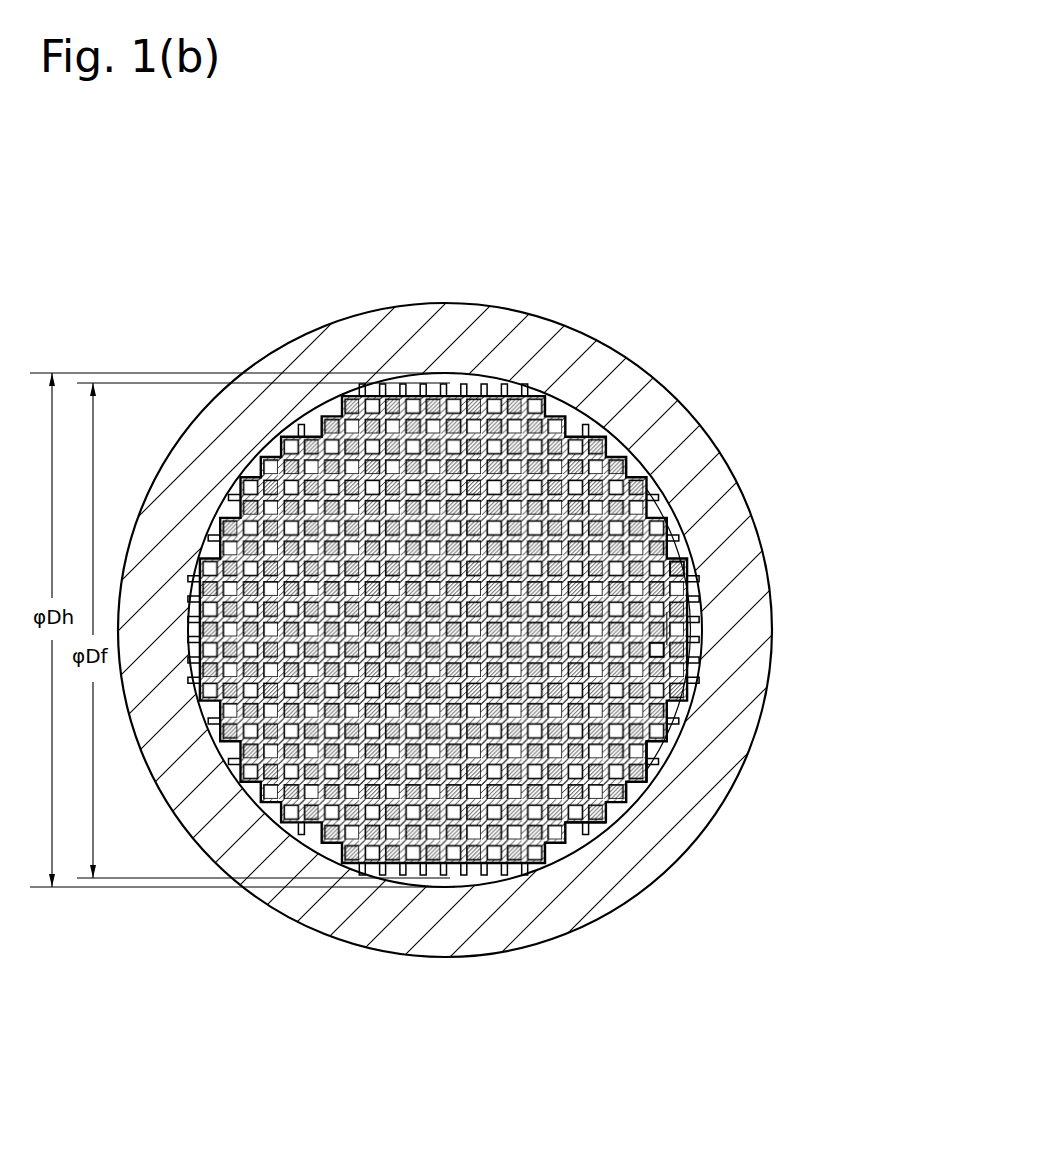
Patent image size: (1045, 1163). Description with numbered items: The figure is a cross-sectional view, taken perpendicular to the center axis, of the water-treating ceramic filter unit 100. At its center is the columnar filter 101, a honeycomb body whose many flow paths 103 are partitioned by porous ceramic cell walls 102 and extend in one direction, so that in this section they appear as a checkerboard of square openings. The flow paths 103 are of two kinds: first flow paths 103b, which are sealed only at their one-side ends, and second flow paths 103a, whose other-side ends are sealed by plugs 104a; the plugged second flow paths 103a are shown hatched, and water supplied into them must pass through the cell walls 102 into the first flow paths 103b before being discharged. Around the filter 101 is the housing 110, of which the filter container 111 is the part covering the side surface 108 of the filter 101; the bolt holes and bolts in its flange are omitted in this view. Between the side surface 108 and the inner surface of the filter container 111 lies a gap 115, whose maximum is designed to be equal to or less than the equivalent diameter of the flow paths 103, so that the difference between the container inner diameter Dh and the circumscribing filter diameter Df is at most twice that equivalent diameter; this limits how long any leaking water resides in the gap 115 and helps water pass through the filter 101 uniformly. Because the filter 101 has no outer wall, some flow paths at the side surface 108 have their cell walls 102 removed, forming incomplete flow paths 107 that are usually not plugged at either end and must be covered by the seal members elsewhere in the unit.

The water-treating ceramic filter unit 100 is at (213, 350).
The housing 110 is at (522, 600).
The filter container 111 is at (627, 398).
The filter 101 is at (655, 495).
The cell walls 102 is at (672, 628).
The flow paths 103 is at (572, 630).
The second flow paths 103a is at (817, 557).
The first flow paths 103b is at (663, 650).
The plugs 104a is at (683, 567).
The gap 115 is at (693, 595).
The incomplete flow paths 107 is at (578, 833).
The side surface 108 is at (655, 762).